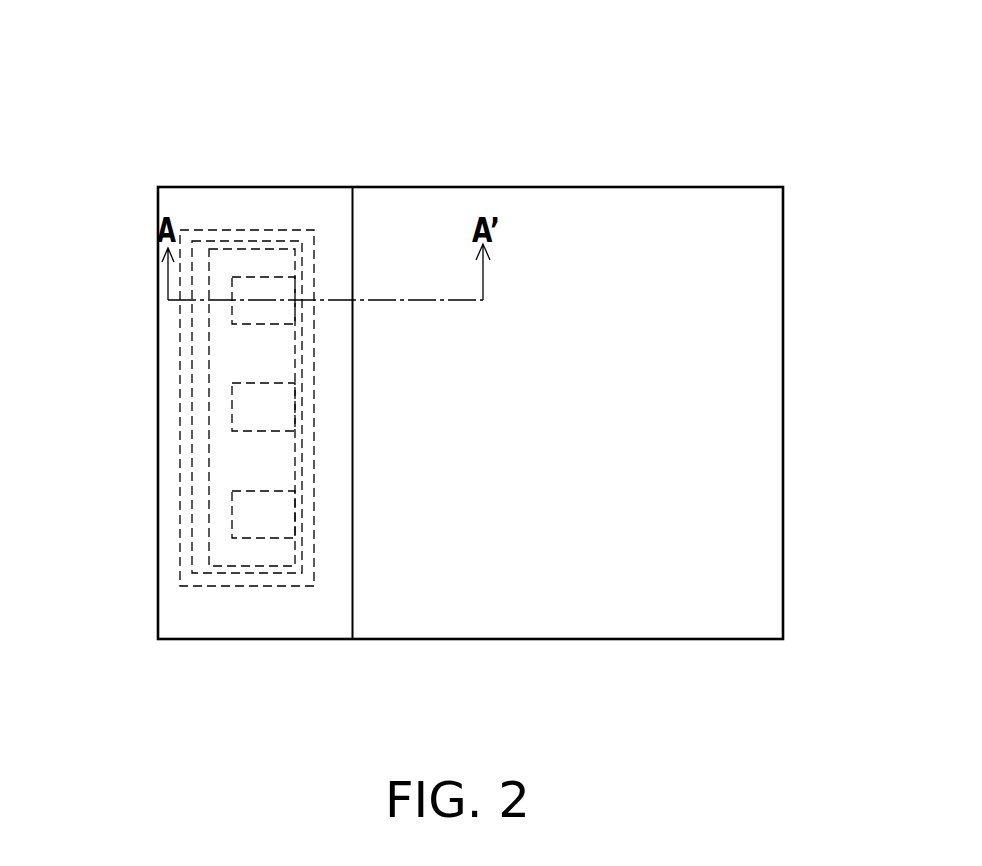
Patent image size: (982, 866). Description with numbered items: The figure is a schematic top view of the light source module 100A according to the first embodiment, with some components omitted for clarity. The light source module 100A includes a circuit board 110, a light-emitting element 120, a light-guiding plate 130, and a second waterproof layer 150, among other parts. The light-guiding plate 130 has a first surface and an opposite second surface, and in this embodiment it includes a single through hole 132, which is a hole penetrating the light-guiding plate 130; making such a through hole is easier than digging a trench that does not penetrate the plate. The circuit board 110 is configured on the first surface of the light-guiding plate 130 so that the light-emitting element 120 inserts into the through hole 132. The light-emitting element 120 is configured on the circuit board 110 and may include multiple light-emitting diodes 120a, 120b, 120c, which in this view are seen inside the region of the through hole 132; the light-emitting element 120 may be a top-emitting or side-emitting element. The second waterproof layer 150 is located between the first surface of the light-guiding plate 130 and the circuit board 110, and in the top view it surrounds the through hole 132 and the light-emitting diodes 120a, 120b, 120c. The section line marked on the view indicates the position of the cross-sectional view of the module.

The light source module 100A is at (843, 742).
The circuit board 110 is at (243, 622).
The light-emitting element 120 is at (389, 275).
The light-emitting diode 120a is at (242, 292).
The light-emitting diode 120b is at (273, 404).
The light-emitting diode 120c is at (273, 512).
The light-guiding plate 130 is at (617, 362).
The through hole 132 is at (210, 333).
The second waterproof layer 150 is at (307, 235).